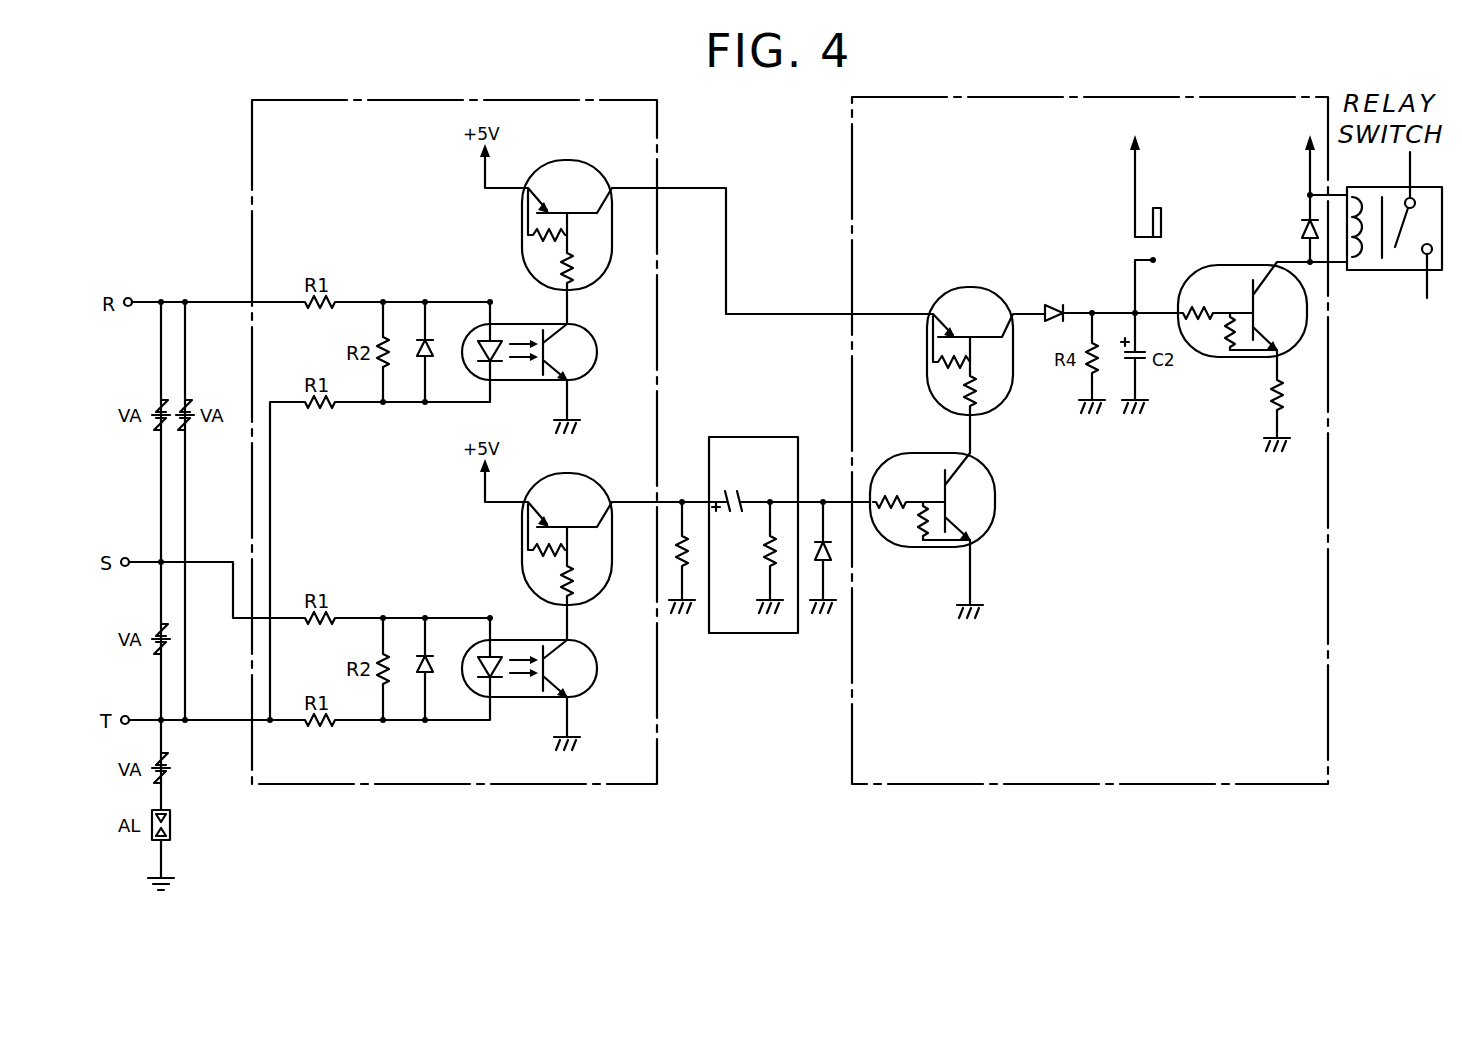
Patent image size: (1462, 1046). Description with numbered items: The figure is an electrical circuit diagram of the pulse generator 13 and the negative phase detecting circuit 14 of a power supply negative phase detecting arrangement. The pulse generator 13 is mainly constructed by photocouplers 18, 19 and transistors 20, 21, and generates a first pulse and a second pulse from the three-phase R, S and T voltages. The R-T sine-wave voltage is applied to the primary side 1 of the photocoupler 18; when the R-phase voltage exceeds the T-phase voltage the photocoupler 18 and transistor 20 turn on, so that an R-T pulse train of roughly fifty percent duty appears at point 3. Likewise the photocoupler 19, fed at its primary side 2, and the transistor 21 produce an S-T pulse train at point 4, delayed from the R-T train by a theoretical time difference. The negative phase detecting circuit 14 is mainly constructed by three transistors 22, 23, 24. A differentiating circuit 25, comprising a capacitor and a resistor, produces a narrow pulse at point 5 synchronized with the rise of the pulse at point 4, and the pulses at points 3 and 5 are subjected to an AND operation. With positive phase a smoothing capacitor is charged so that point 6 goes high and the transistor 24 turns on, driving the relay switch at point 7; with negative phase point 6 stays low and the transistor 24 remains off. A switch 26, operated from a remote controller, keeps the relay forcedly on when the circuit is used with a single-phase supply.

The pulse generator 13 is at (550, 786).
The negative phase detecting circuit 14 is at (963, 786).
The photocoupler 18 is at (597, 356).
The photocoupler 19 is at (597, 672).
The transistor 20 is at (522, 230).
The transistor 21 is at (522, 544).
The transistor 22 is at (995, 500).
The transistor 23 is at (970, 287).
The transistor 24 is at (1242, 265).
The differentiating circuit 25 is at (752, 634).
The switch 26 is at (1161, 208).
The primary side of the photocoupler 1 is at (490, 288).
The primary side of the photocoupler 2 is at (490, 605).
The R-T pulse train point 3 is at (769, 235).
The S-T pulse train point 4 is at (741, 486).
The differentiated pulse point 5 is at (823, 539).
The smoothing capacitor output point 6 is at (1111, 299).
The relay switch drive point 7 is at (1324, 213).